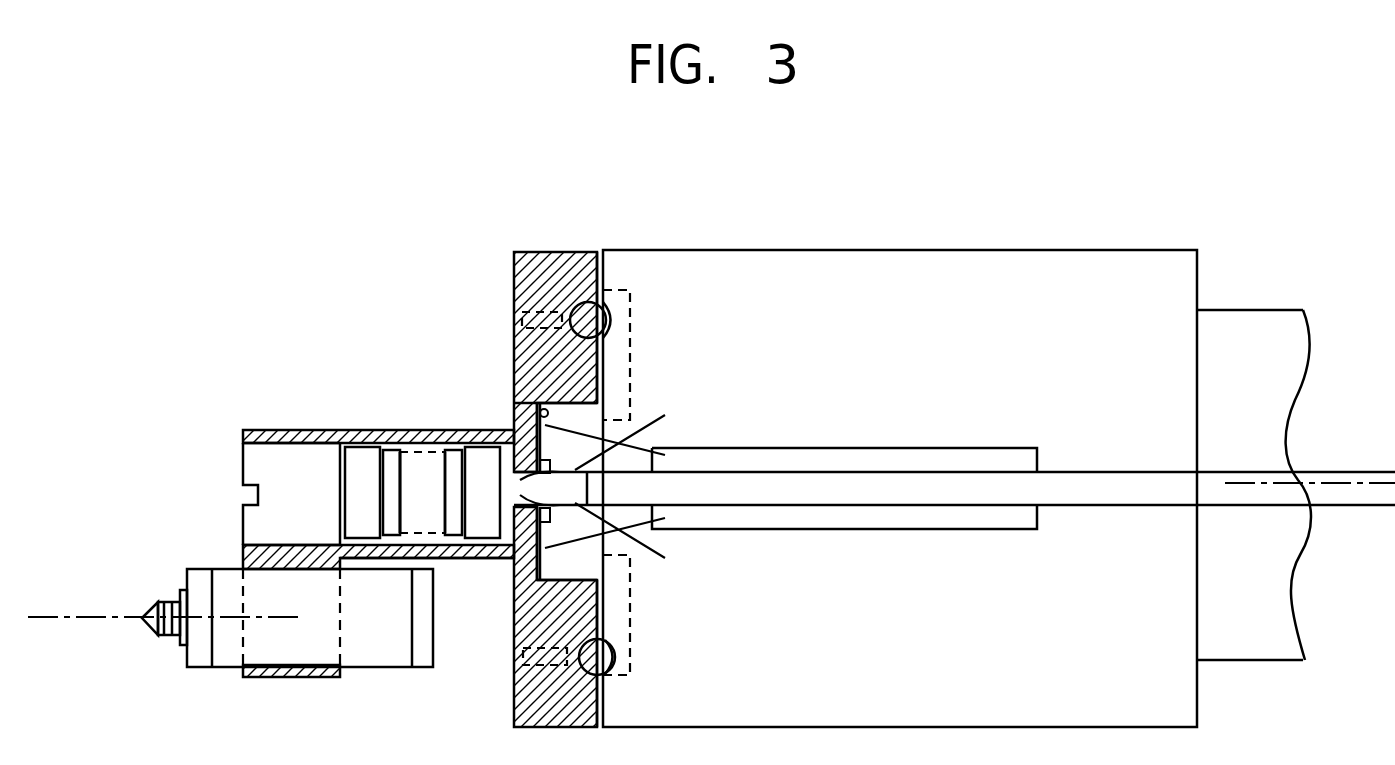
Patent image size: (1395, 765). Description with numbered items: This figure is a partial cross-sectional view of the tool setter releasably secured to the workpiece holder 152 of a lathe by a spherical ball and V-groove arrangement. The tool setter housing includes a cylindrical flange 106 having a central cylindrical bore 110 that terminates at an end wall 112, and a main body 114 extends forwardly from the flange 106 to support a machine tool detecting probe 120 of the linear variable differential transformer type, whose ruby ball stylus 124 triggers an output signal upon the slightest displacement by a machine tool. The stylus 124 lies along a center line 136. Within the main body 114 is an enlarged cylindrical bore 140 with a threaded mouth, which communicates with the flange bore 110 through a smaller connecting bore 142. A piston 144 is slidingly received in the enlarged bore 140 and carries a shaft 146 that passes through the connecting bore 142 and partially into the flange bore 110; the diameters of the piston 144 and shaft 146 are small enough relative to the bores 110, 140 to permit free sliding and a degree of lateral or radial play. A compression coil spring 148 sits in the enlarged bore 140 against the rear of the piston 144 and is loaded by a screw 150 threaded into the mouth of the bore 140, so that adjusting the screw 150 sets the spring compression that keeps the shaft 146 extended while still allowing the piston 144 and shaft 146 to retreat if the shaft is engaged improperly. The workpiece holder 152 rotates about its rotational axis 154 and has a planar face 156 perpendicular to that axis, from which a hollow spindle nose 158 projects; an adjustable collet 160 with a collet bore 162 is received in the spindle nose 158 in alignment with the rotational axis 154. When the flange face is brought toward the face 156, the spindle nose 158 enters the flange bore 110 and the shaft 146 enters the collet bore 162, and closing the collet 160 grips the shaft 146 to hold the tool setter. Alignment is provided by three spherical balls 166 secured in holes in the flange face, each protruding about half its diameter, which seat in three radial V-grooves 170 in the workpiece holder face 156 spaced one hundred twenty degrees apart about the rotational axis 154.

The cylindrical flange 106 is at (557, 728).
The central cylindrical bore 110 is at (610, 385).
The end wall 112 is at (520, 403).
The main body 114 is at (462, 550).
The machine tool detecting probe 120 is at (217, 668).
The ruby ball stylus 124 is at (143, 619).
The actuator axis 136 is at (82, 617).
The enlarged cylindrical bore 140 is at (398, 455).
The connecting bore 142 is at (628, 542).
The piston 144 is at (480, 445).
The shaft 146 is at (600, 448).
The compression coil spring 148 is at (442, 553).
The screw 150 is at (283, 450).
The workpiece holder 152 is at (1000, 248).
The rotational axis 154 is at (1312, 480).
The planar face 156 is at (590, 255).
The hollow spindle nose 158 is at (578, 562).
The adjustable collet 160 is at (600, 410).
The collet bore 162 is at (610, 490).
The spherical ball 166 is at (625, 320).
The radial V-groove 170 is at (630, 330).